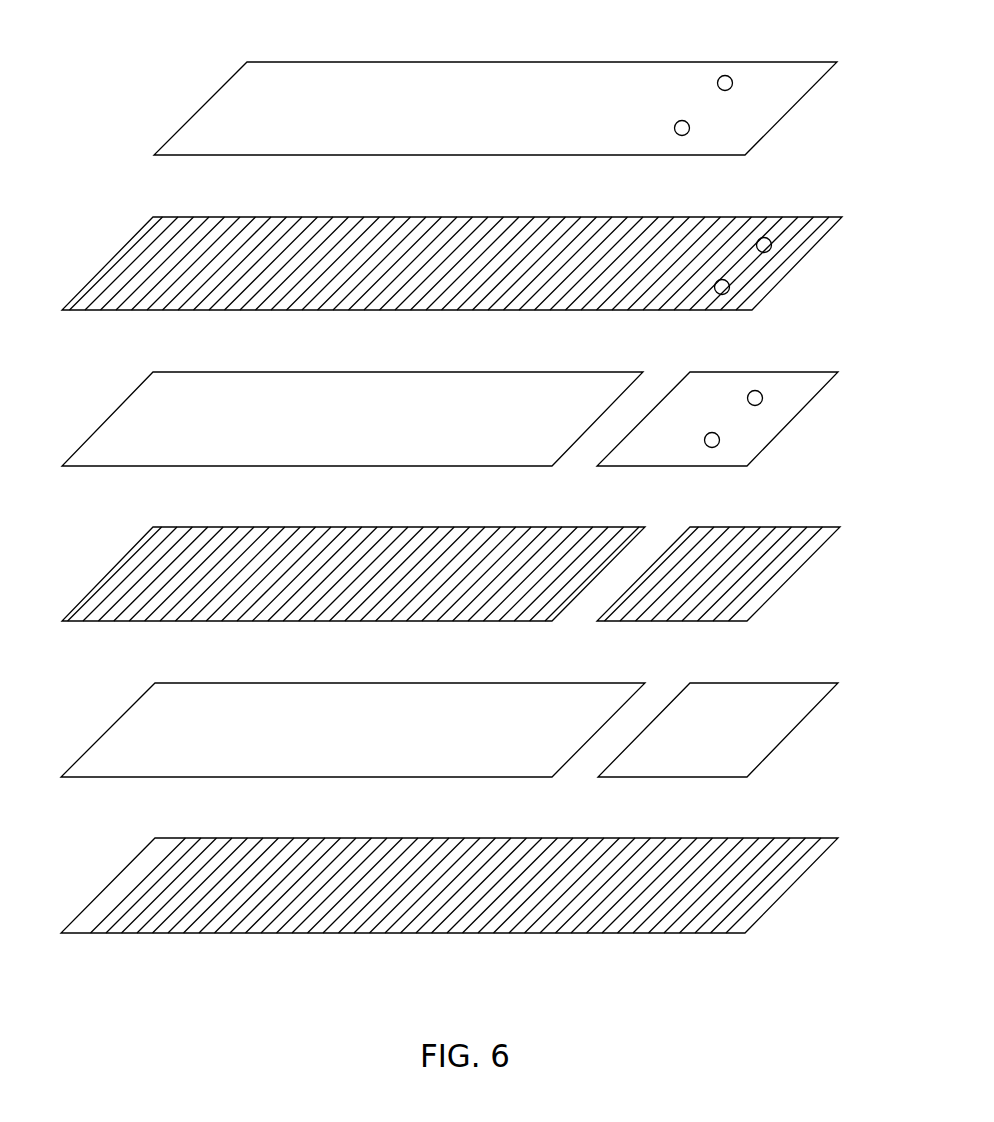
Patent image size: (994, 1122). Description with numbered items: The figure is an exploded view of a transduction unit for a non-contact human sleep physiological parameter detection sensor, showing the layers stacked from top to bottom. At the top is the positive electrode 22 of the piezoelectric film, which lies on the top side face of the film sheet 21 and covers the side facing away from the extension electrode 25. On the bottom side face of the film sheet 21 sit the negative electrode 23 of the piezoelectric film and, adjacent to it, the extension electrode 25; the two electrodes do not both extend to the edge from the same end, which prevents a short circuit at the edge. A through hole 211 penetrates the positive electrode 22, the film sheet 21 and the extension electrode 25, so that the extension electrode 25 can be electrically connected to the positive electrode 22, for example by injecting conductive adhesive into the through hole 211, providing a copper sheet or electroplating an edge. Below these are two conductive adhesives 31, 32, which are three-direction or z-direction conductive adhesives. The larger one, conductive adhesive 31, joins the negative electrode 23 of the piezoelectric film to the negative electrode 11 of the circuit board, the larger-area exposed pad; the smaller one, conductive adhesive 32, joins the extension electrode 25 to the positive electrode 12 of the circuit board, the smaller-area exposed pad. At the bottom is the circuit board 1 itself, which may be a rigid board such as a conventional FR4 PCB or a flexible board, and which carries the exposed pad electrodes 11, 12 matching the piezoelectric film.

The circuit board 1 is at (122, 923).
The negative electrode of the circuit board 11 is at (120, 754).
The positive electrode of the circuit board 12 is at (743, 748).
The film sheet 21 is at (128, 272).
The through hole 211 is at (731, 78).
The positive electrode of the piezoelectric film 22 is at (228, 125).
The negative electrode of the piezoelectric film 23 is at (134, 424).
The extension electrode 25 is at (758, 435).
The conductive adhesive 31 is at (125, 573).
The conductive adhesive 32 is at (752, 575).